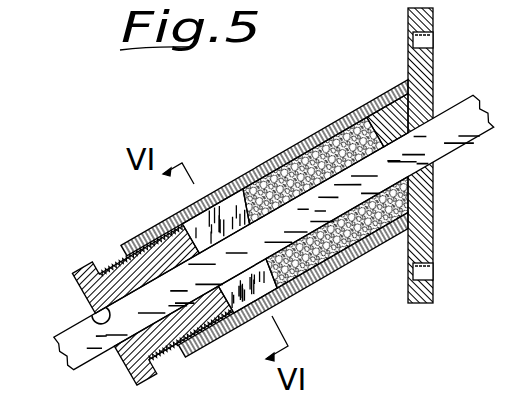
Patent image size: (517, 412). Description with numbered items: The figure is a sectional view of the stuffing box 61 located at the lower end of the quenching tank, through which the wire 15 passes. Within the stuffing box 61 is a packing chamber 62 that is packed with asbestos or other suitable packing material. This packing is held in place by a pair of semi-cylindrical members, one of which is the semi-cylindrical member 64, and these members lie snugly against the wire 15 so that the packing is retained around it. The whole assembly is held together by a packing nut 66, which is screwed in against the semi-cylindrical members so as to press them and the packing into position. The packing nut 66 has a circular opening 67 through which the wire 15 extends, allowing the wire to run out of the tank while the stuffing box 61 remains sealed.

The wire 15 is at (458, 99).
The stuffing box 61 is at (303, 144).
The packing chamber 62 is at (296, 170).
The semi-cylindrical member 64 is at (222, 213).
The packing nut 66 is at (78, 268).
The circular opening 67 is at (88, 317).